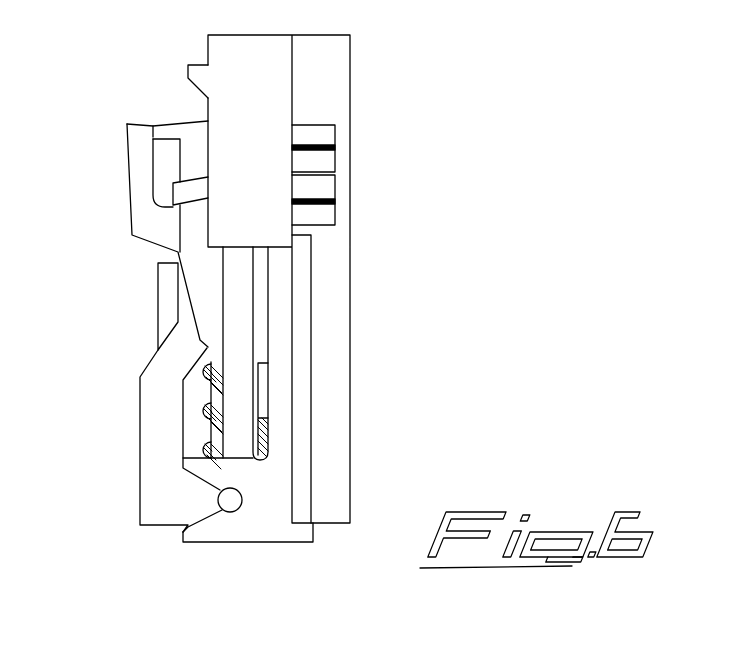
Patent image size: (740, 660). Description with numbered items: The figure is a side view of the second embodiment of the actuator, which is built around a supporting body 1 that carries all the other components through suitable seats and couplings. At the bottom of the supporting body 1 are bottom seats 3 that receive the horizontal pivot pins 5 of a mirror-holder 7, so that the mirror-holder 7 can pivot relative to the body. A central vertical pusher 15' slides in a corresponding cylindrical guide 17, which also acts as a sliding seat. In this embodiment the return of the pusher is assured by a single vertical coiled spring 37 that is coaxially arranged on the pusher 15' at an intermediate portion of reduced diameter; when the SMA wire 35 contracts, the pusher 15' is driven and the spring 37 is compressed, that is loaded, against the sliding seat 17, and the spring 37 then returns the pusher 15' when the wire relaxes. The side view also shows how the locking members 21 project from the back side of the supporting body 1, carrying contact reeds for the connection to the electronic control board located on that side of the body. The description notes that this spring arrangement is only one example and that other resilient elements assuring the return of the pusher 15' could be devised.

The supporting body 1 is at (333, 73).
The locking members 21 is at (317, 163).
The mirror-holder 7 is at (155, 492).
The cylindrical guide 17 is at (168, 293).
The pusher 15' is at (142, 440).
The vertical coiled spring 37 is at (212, 407).
The SMA wire 35 is at (243, 305).
The horizontal pivot pins 5 is at (225, 508).
The bottom seats 3 is at (258, 525).